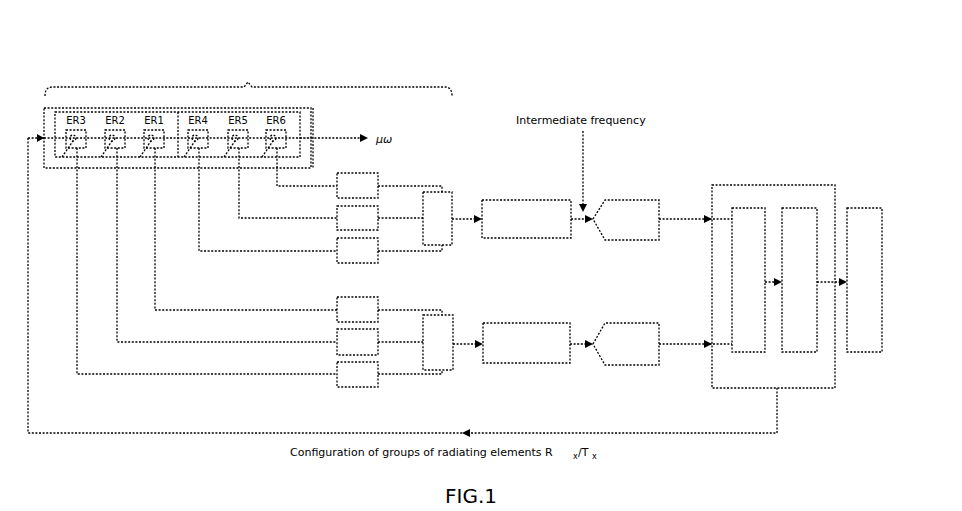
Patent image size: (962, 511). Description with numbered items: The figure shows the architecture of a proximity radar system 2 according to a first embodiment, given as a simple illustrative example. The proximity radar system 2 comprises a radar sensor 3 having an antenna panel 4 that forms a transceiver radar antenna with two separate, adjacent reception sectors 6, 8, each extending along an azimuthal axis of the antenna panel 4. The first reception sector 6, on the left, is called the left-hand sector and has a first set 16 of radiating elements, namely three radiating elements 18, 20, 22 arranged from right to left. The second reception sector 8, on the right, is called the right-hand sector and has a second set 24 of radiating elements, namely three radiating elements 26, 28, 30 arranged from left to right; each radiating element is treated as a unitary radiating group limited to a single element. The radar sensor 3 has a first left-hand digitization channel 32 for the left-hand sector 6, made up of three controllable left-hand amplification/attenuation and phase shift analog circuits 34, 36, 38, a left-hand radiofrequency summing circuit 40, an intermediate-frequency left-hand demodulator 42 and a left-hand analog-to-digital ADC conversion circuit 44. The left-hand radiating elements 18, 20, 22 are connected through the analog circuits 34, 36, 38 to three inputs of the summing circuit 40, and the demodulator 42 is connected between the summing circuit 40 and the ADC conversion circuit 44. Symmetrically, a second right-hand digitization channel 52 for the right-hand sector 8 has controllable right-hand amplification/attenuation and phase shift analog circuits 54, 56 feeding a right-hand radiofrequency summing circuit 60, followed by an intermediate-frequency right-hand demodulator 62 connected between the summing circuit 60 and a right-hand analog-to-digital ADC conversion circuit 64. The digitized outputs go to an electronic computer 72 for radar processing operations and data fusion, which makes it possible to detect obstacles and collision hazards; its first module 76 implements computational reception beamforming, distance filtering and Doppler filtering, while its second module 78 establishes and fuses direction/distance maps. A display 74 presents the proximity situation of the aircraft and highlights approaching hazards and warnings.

The proximity radar system 2 is at (93, 12).
The radar sensor 3 is at (120, 76).
The antenna panel 4 is at (310, 108).
The first reception sector 6 is at (73, 168).
The second reception sector 8 is at (300, 131).
The first set of radiating elements 16 is at (92, 152).
The radiating element 18 is at (112, 160).
The radiating element 20 is at (117, 163).
The radiating element 22 is at (69, 162).
The second set of radiating elements 24 is at (252, 152).
The radiating element 26 is at (194, 160).
The radiating element 28 is at (233, 160).
The radiating element 30 is at (272, 162).
The first left-hand digitization channel 32 is at (498, 318).
The controllable left-hand amplification/attenuation and phase shift analog circuit 34 is at (332, 385).
The controllable left-hand amplification/attenuation and phase shift analog circuit 36 is at (332, 353).
The controllable left-hand amplification/attenuation and phase shift analog circuit 38 is at (332, 320).
The left-hand radiofrequency summing circuit 40 is at (455, 370).
The intermediate-frequency left-hand demodulator 42 is at (512, 363).
The left-hand analog-to-digital ADC conversion circuit 44 is at (620, 365).
The second right-hand digitization channel 52 is at (494, 262).
The controllable right-hand amplification/attenuation and phase shift analog circuit 54 is at (332, 261).
The controllable right-hand amplification/attenuation and phase shift analog circuit 56 is at (332, 196).
The right-hand radiofrequency summing circuit 60 is at (452, 245).
The intermediate-frequency right-hand demodulator 62 is at (548, 238).
The right-hand analog-to-digital ADC conversion circuit 64 is at (620, 240).
The electronic computer 72 is at (770, 185).
The display 74 is at (862, 208).
The first module 76 is at (748, 352).
The second module 78 is at (793, 352).